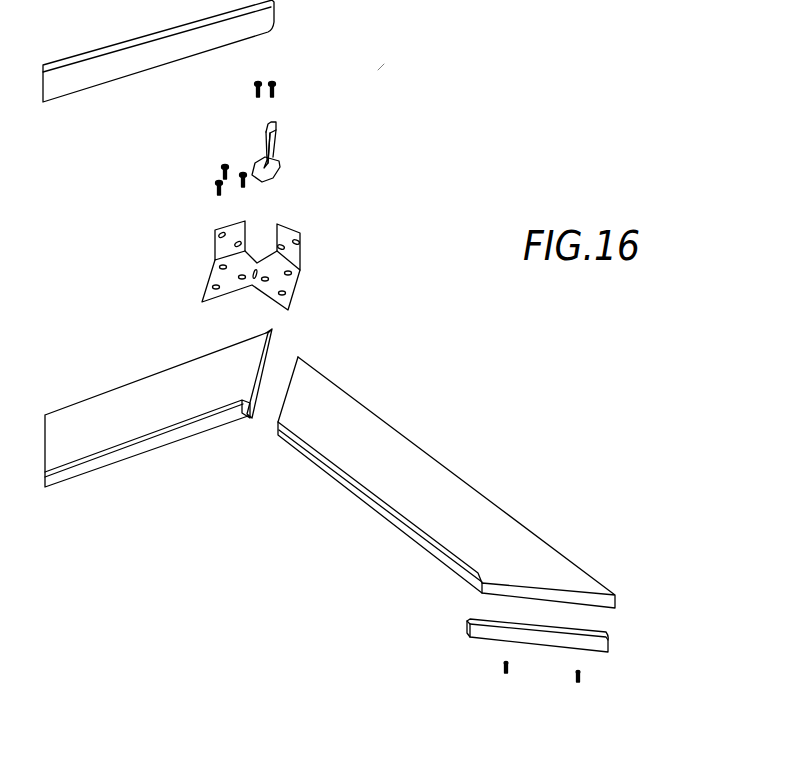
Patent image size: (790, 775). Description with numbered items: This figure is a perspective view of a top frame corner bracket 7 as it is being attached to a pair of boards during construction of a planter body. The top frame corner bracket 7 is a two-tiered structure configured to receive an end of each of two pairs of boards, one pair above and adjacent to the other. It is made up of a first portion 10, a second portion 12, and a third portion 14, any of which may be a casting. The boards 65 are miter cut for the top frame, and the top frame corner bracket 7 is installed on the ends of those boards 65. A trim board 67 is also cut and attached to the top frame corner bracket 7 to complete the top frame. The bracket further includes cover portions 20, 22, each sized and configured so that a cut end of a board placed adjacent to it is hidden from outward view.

The top frame corner bracket 7 is at (372, 77).
The trim board 67 is at (107, 86).
The third portion 14 is at (312, 151).
The cover portion 22 is at (266, 136).
The first portion 10 is at (173, 255).
The board 65 is at (83, 412).
The second portion 12 is at (290, 341).
The cover portion 20 is at (483, 640).